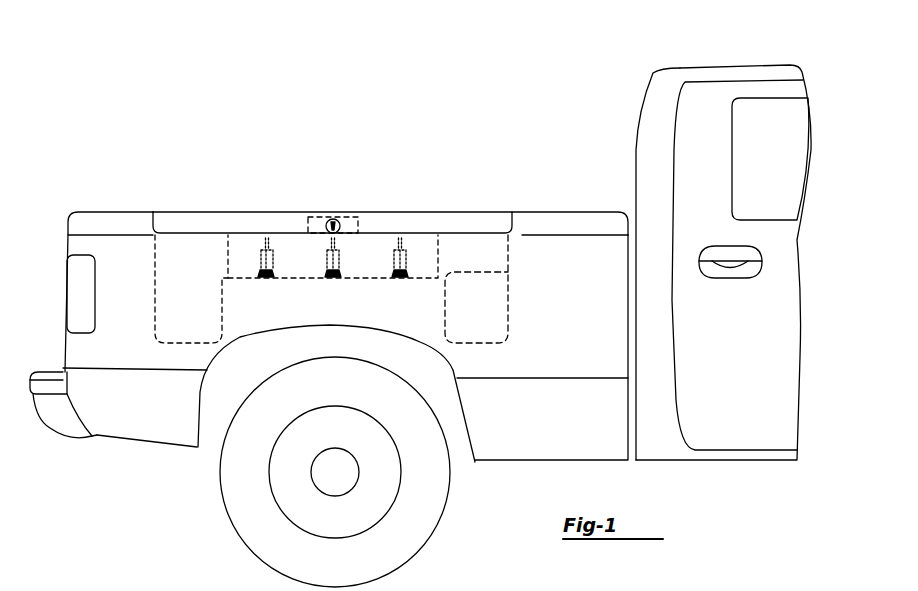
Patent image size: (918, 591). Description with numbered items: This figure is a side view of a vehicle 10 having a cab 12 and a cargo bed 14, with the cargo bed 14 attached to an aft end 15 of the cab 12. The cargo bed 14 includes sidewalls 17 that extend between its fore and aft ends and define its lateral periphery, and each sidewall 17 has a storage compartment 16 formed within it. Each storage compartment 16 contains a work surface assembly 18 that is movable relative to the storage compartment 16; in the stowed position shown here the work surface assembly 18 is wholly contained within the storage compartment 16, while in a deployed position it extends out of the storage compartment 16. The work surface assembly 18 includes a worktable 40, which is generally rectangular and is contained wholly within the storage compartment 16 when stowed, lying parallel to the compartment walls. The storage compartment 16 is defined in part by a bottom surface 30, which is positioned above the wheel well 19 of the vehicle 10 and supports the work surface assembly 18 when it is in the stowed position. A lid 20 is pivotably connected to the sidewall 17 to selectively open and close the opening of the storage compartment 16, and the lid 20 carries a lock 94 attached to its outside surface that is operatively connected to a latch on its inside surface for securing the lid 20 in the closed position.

The vehicle 10 is at (550, 68).
The cab 12 is at (757, 60).
The cargo bed 14 is at (251, 163).
The aft end 15 is at (655, 72).
The storage compartment 16 is at (428, 210).
The sidewall 17 is at (587, 210).
The work surface assembly 18 is at (440, 250).
The wheel well 19 is at (233, 381).
The lid 20 is at (183, 210).
The bottom surface 30 is at (468, 272).
The worktable 40 is at (290, 212).
The lock 94 is at (334, 219).